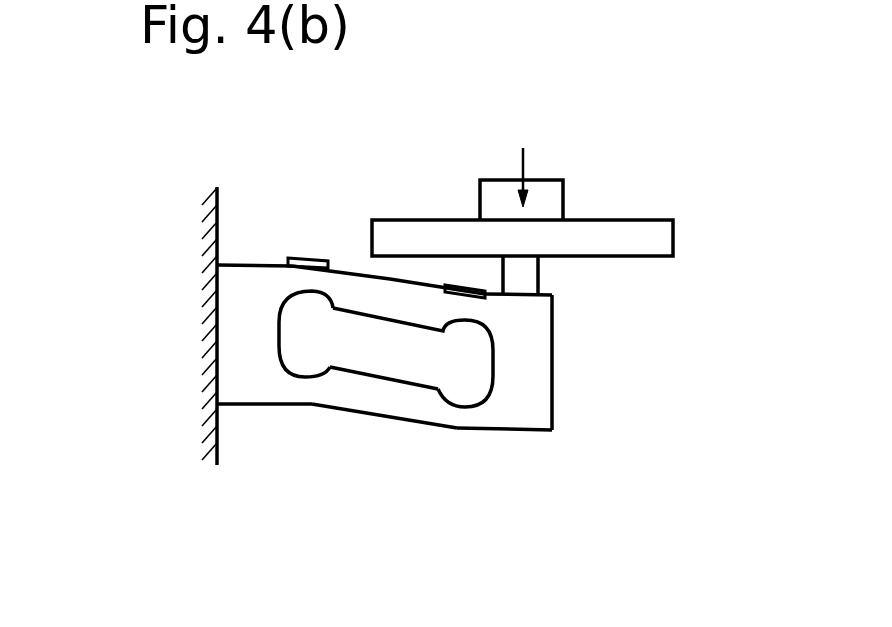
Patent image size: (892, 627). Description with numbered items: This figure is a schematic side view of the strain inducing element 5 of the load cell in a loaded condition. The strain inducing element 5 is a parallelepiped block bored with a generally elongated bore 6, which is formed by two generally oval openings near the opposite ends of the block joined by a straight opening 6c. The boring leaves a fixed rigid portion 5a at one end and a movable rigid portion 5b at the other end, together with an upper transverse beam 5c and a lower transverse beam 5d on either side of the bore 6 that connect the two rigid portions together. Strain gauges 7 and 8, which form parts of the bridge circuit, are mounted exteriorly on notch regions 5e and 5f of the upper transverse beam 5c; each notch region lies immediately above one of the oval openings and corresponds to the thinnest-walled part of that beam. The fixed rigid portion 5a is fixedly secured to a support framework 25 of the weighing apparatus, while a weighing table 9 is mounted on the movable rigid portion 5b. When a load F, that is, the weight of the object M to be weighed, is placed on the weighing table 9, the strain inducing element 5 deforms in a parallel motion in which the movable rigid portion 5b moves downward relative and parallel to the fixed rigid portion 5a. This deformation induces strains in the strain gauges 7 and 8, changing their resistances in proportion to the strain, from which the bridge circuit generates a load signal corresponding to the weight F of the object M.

The support framework 25 is at (187, 282).
The strain inducing element 5 is at (383, 329).
The fixed rigid portion 5a is at (240, 338).
The movable rigid portion 5b is at (552, 383).
The upper transverse beam 5c is at (380, 290).
The lower transverse beam 5d is at (373, 402).
The notch region 5e is at (300, 278).
The notch region 5f is at (462, 300).
The elongated bore 6 is at (374, 431).
The straight opening 6c is at (383, 373).
The strain gauge 7 is at (307, 258).
The strain gauge 8 is at (462, 284).
The weighing table 9 is at (613, 224).
The object to be weighed M is at (565, 195).
The load F is at (527, 161).